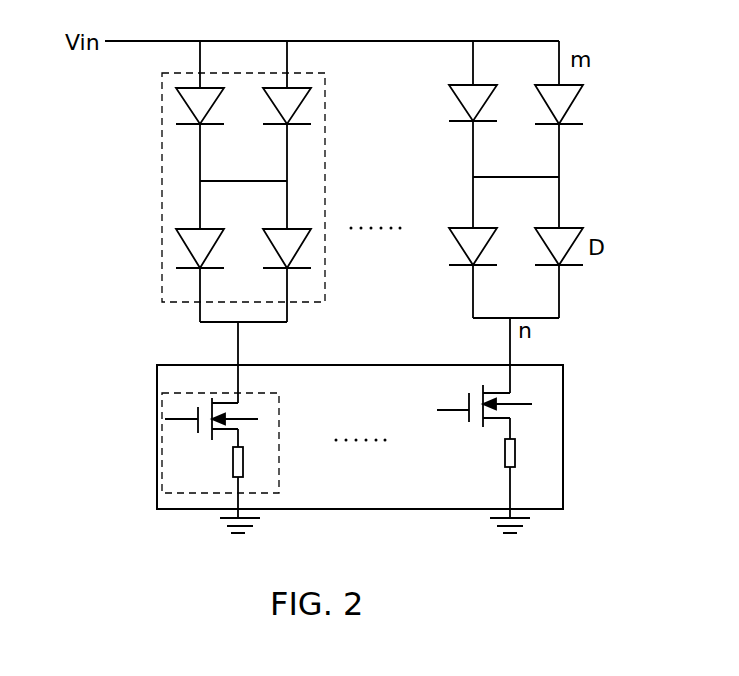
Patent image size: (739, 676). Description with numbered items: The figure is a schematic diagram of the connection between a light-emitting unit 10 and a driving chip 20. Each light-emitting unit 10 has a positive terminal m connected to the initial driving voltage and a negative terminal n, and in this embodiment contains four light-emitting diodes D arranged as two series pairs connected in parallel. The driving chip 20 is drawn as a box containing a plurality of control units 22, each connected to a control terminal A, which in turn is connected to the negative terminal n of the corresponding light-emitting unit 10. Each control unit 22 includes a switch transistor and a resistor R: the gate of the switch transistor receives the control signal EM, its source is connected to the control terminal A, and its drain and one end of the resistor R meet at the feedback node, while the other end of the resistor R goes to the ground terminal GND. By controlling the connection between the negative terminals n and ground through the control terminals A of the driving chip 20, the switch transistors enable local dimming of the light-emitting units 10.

The light-emitting unit 10 is at (162, 247).
The driving chip 20 is at (379, 464).
The control unit 22 is at (180, 493).